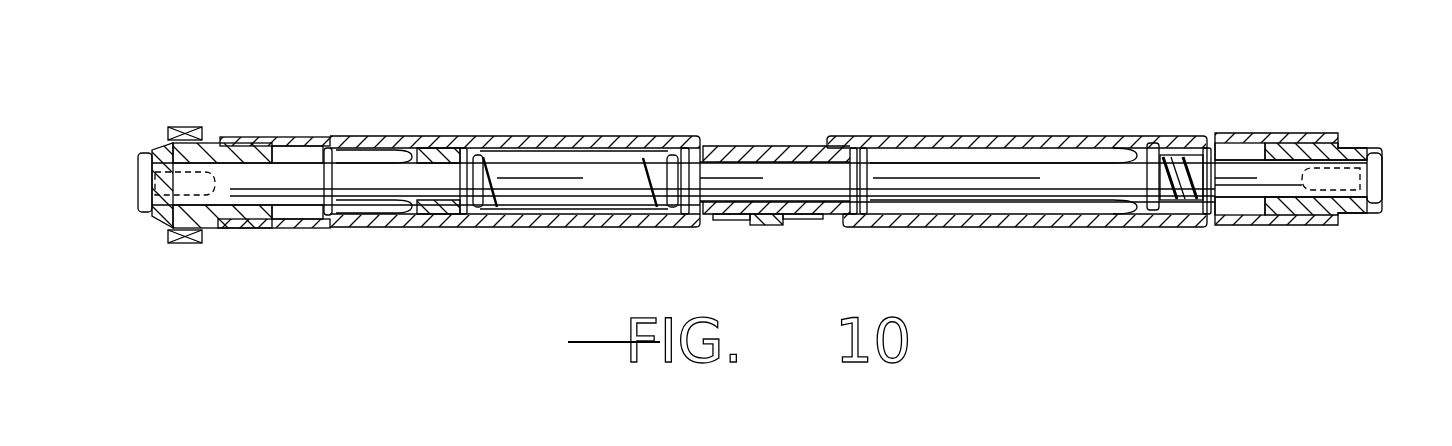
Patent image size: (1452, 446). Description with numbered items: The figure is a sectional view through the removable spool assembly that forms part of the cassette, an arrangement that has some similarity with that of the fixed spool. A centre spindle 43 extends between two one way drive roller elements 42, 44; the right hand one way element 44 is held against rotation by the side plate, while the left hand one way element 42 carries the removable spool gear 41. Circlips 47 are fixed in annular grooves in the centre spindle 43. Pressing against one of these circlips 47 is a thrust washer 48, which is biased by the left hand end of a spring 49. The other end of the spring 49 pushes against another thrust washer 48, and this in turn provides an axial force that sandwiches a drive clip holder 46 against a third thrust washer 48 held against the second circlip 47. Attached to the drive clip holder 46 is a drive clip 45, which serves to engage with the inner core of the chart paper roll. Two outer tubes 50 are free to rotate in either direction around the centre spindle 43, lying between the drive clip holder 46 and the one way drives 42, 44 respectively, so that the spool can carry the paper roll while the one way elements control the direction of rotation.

The removable spool gear 41 is at (187, 127).
The one way drive roller element 42 is at (290, 137).
The centre spindle 43 is at (397, 180).
The one way drive roller element 44 is at (1240, 156).
The drive clip 45 is at (803, 224).
The drive clip holder 46 is at (760, 146).
The circlips 47 is at (327, 228).
The thrust washers 48 is at (1158, 216).
The spring 49 is at (488, 157).
The outer tubes 50 is at (592, 228).